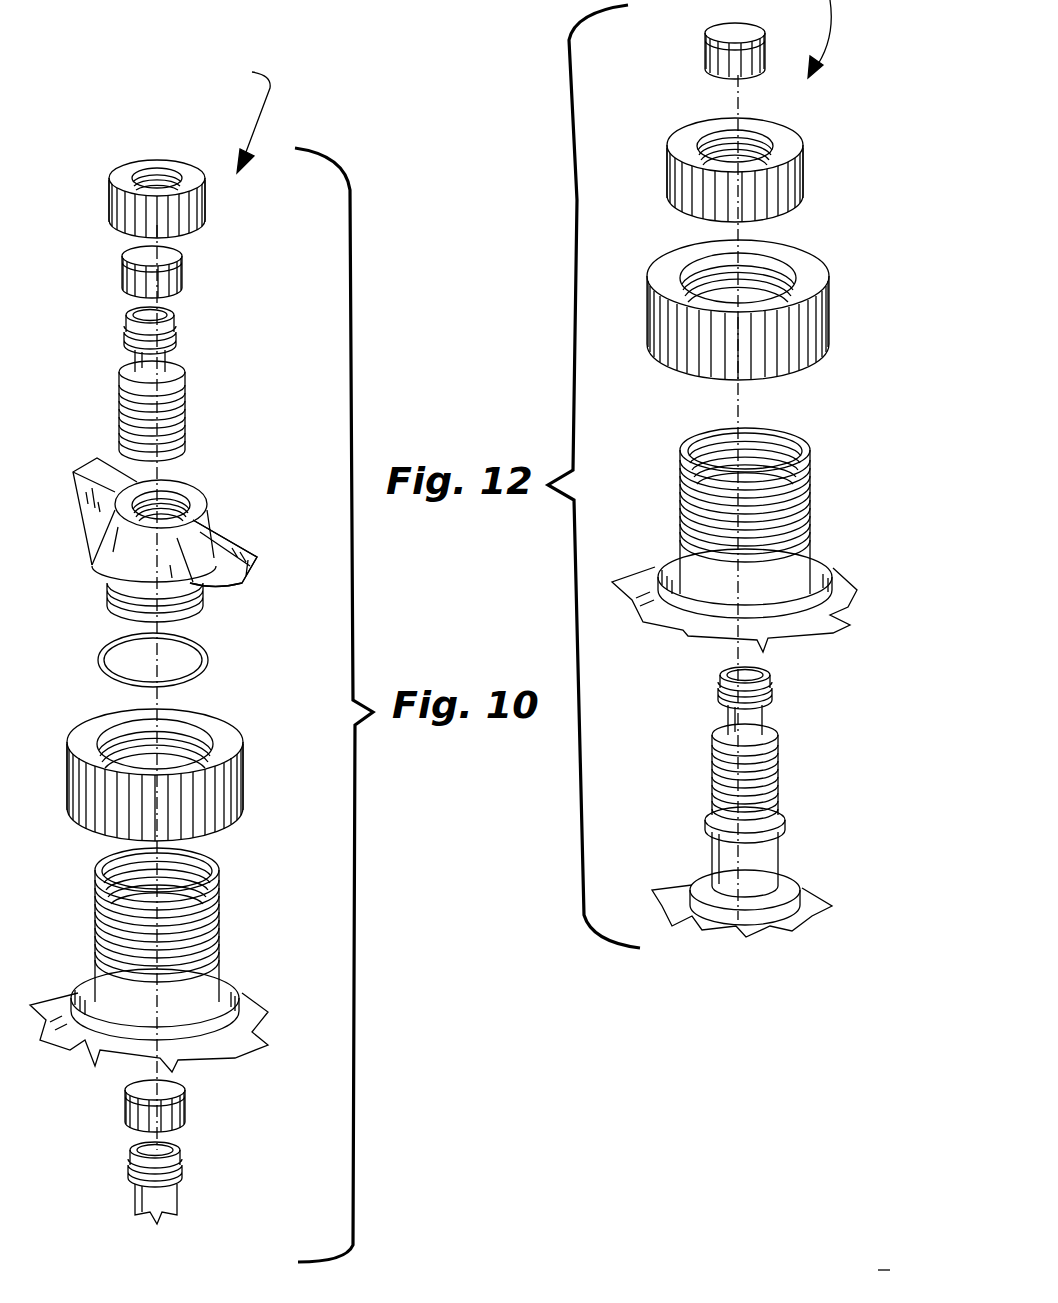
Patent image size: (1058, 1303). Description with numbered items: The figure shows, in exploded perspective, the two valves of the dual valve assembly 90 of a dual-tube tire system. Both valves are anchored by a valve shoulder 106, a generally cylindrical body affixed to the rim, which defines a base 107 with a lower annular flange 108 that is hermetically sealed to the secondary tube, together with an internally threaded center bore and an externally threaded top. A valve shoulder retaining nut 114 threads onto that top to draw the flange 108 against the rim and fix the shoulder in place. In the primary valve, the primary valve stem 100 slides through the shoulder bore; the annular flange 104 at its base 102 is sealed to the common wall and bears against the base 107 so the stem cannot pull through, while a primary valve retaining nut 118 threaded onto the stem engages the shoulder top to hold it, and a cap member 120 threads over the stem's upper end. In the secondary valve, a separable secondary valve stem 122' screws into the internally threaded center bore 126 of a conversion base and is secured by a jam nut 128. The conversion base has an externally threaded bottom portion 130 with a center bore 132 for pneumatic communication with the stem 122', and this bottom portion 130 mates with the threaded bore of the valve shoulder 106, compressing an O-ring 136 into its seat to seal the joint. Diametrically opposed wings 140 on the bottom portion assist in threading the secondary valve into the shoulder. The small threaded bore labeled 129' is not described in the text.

In FIG. 10, the dual valve assembly 90 is at (241, 114).
In FIG. 12, the primary valve stem 100 is at (726, 724).
In FIG. 12, the base of the primary valve stem 102 is at (740, 886).
In FIG. 12, the annular flange 104 is at (690, 890).
In FIG. 10, the valve shoulder 106 is at (221, 886).
In FIG. 12, the valve shoulder 106 is at (681, 480).
In FIG. 10, the base of the valve shoulder 107 is at (225, 988).
In FIG. 12, the base of the valve shoulder 107 is at (666, 562).
In FIG. 10, the lower annular flange 108 is at (250, 1018).
In FIG. 12, the lower annular flange 108 is at (672, 598).
In FIG. 12, the valve shoulder retaining nut 114 is at (656, 314).
In FIG. 12, the primary valve retaining nut 118 is at (672, 180).
In FIG. 12, the cap member 120 is at (706, 60).
In FIG. 10, the secondary valve stem 122' is at (216, 384).
In FIG. 10, the center bore of the conversion base 126 is at (190, 493).
In FIG. 10, the jam nut 128 is at (205, 198).
In FIG. 10, the threaded bore 129' is at (228, 505).
In FIG. 10, the externally-threaded bottom portion 130 is at (205, 604).
In FIG. 10, the center bore of the bottom portion 132 is at (174, 532).
In FIG. 10, the O-ring 136 is at (208, 666).
In FIG. 10, the wings 140 is at (80, 468).